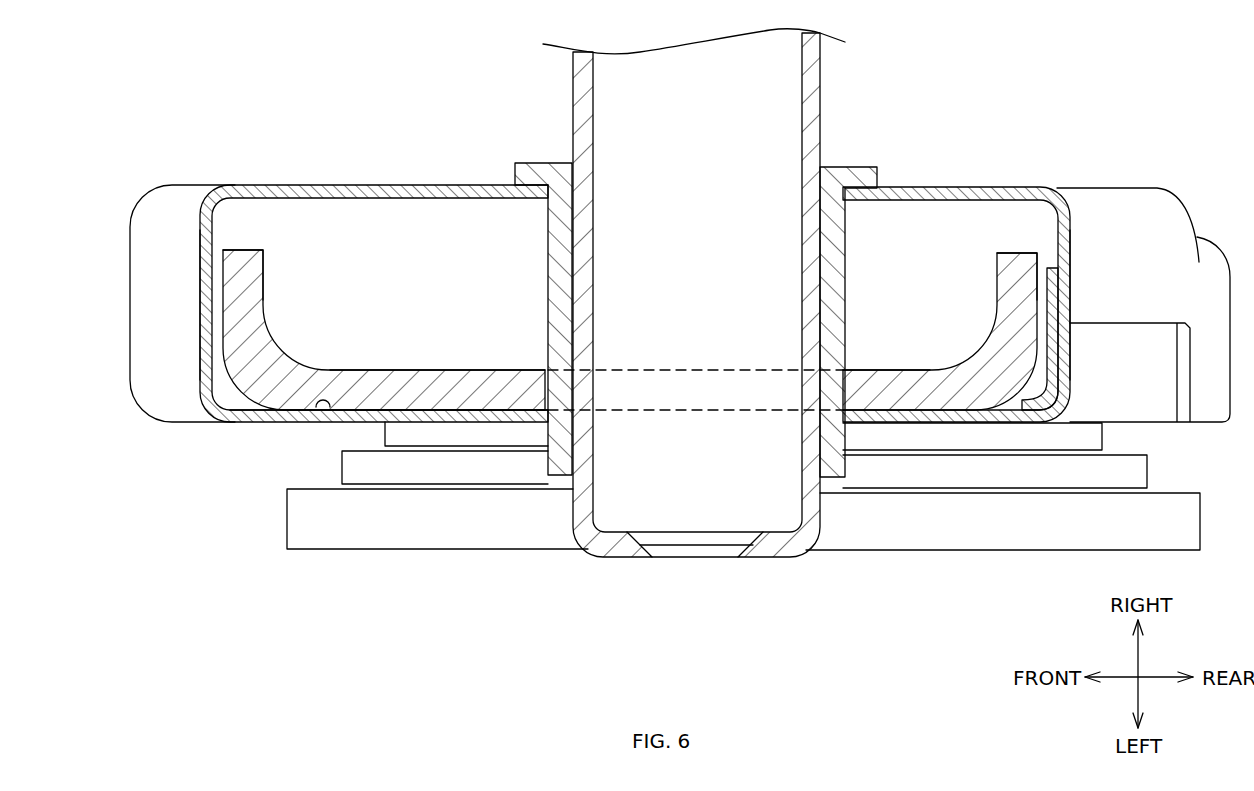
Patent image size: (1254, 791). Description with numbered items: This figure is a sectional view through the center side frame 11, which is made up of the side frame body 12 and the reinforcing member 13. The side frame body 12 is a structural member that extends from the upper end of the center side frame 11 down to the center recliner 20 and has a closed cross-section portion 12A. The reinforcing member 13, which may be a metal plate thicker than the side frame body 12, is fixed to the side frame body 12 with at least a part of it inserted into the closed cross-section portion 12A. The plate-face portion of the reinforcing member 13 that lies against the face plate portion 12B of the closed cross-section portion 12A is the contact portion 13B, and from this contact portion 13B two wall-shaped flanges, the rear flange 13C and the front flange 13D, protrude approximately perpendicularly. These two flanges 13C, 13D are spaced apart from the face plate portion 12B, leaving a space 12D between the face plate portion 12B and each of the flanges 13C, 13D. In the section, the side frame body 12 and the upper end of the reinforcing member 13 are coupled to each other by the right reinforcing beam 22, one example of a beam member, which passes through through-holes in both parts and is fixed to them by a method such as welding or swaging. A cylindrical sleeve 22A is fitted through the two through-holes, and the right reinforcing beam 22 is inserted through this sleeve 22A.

The center side frame 11 is at (386, 139).
The side frame body 12 is at (1142, 180).
The closed cross-section portion 12A is at (953, 187).
The face plate portion 12B is at (323, 400).
The space 12D is at (220, 352).
The reinforcing member 13 is at (360, 361).
The contact portion 13B is at (465, 368).
The rear flange 13C is at (995, 280).
The front flange 13D is at (265, 268).
The center recliner 20 is at (941, 561).
The right reinforcing beam 22 is at (820, 63).
The cylindrical sleeve 22A is at (850, 165).